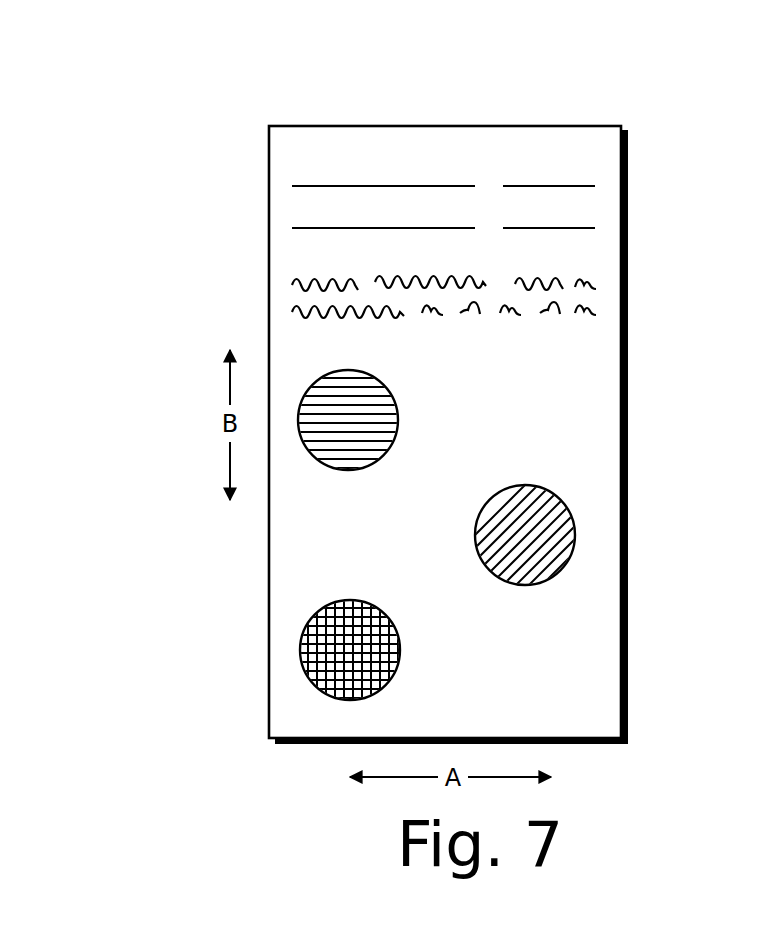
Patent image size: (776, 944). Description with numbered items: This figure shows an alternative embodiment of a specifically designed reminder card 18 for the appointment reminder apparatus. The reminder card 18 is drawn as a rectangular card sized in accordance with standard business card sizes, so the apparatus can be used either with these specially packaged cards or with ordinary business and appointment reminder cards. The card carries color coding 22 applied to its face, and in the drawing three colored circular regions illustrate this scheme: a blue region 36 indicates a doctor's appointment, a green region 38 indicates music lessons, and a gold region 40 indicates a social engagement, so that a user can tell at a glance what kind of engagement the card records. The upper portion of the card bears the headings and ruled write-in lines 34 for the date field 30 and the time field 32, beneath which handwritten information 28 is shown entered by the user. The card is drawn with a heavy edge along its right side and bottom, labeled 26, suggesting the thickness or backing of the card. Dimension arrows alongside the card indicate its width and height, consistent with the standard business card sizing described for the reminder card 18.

The reminder card 18 is at (262, 84).
The color coding 22 is at (524, 369).
The adhesive backing 26 is at (580, 745).
The handwritten information 28 is at (605, 281).
The date field 30 is at (345, 135).
The time field 32 is at (542, 137).
The write-in lines 34 is at (568, 205).
The blue color code 36 is at (312, 385).
The green color code 38 is at (575, 530).
The gold color code 40 is at (300, 652).